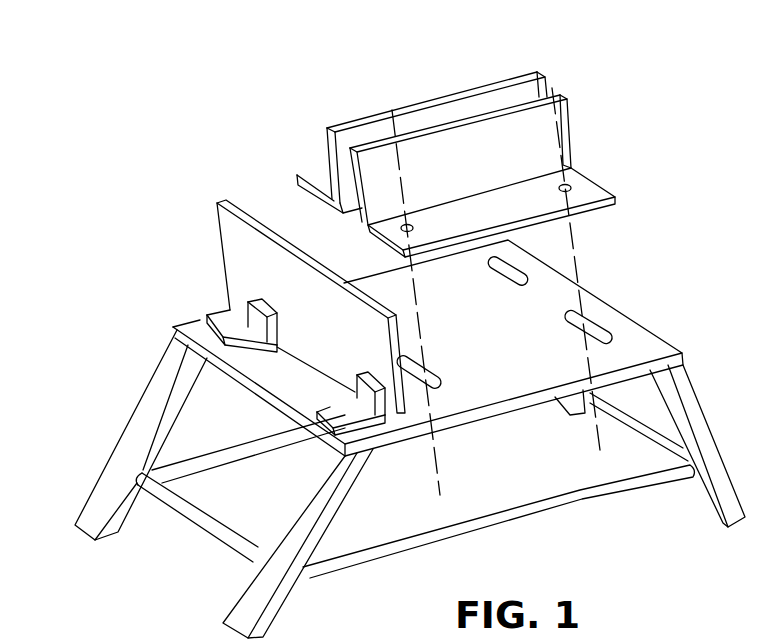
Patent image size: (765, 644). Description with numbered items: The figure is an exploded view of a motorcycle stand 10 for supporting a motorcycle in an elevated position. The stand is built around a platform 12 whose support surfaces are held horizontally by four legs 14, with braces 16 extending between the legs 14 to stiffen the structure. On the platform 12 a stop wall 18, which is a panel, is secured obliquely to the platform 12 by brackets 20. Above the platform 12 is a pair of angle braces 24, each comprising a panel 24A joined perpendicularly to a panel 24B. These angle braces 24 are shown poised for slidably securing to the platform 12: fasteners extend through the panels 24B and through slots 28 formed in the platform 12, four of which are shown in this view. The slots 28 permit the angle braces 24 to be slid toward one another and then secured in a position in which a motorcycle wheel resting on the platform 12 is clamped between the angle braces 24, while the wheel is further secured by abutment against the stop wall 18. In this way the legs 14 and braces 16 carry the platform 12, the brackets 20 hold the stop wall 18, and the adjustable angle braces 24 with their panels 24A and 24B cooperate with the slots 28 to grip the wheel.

The motorcycle stand 10 is at (62, 200).
The platform 12 is at (553, 299).
The legs 14 is at (132, 445).
The braces 16 is at (233, 455).
The stop wall 18 is at (220, 232).
The brackets 20 is at (338, 408).
The angle braces 24 is at (462, 132).
The panel 24A is at (370, 132).
The panel 24B is at (312, 172).
The slots 28 is at (568, 328).